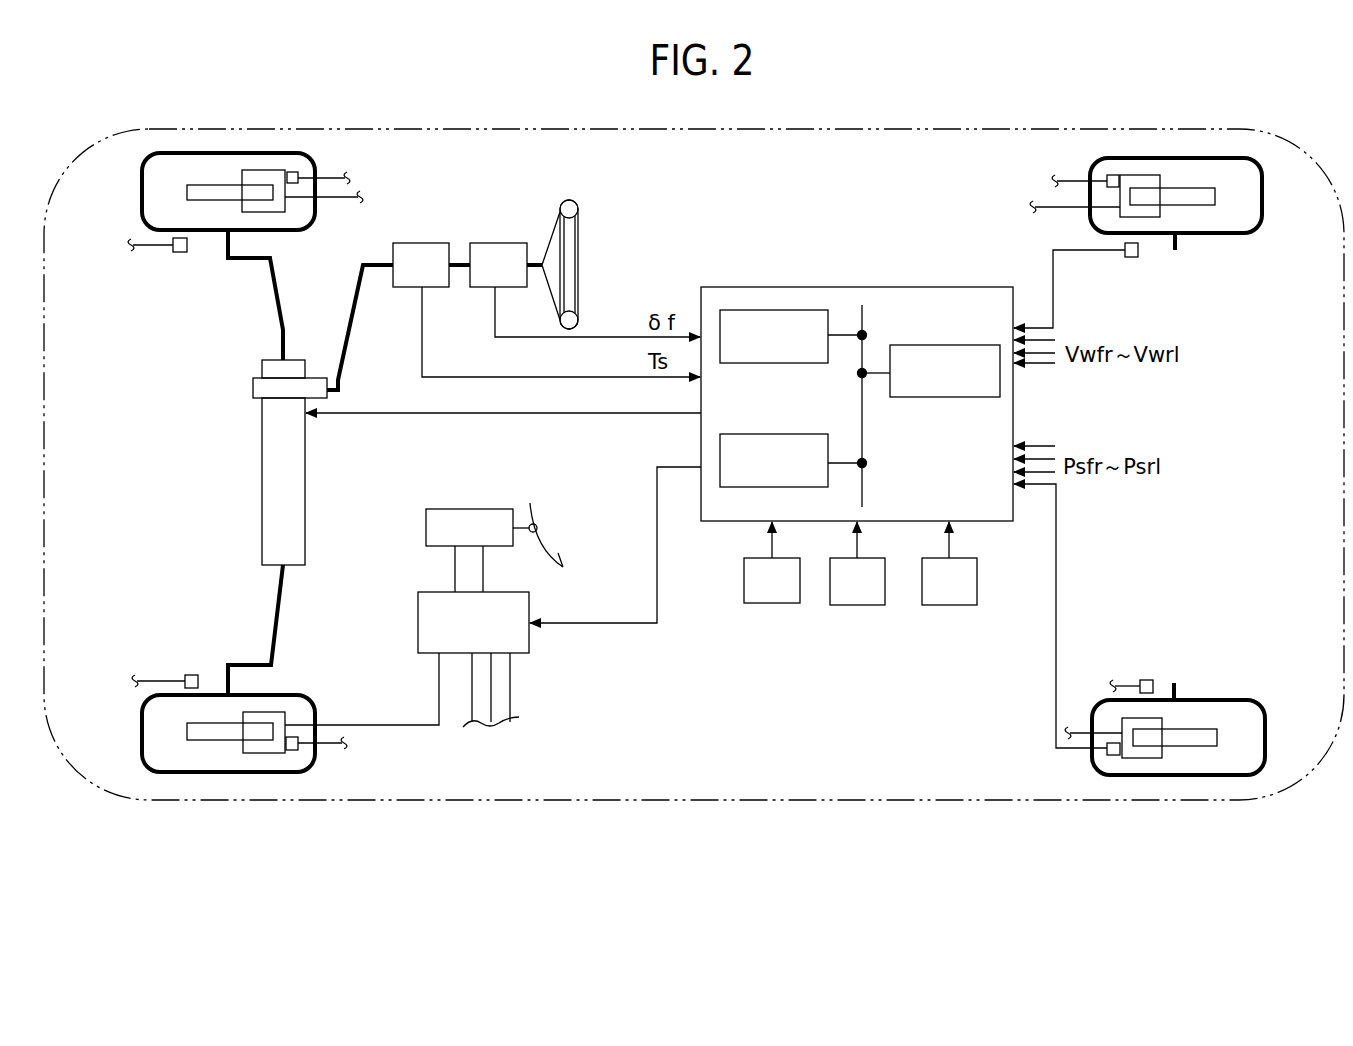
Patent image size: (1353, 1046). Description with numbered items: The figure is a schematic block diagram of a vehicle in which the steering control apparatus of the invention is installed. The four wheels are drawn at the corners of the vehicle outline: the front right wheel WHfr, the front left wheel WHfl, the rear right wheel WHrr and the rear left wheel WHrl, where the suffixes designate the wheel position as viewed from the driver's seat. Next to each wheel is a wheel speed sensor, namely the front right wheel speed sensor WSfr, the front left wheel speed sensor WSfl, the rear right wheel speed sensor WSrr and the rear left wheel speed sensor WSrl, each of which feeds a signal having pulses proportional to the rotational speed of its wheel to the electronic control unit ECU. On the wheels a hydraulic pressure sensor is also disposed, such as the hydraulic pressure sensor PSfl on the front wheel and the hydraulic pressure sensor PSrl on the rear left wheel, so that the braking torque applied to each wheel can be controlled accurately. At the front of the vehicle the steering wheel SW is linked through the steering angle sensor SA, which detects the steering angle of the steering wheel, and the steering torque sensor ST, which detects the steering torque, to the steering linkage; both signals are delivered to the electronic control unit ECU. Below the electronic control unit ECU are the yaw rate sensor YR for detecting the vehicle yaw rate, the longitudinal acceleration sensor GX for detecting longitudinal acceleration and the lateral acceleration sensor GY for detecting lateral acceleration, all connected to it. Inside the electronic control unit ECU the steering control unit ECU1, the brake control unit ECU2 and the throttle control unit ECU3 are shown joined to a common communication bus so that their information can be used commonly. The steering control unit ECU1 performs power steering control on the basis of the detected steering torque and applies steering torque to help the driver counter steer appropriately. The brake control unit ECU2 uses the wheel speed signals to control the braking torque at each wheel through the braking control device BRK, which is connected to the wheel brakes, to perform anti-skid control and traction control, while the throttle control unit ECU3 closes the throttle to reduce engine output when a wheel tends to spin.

The front right wheel WHfr is at (198, 153).
The front left hydraulic pressure sensor PSfl is at (292, 172).
The front right wheel speed sensor WSfr is at (181, 253).
The steering torque sensor ST is at (421, 265).
The steering angle sensor SA is at (498, 265).
The steering wheel SW is at (575, 200).
The electronic control unit ECU is at (857, 404).
The steering control unit ECU1 is at (793, 336).
The brake control unit ECU2 is at (929, 371).
The throttle control unit ECU3 is at (793, 460).
The yaw rate sensor YR is at (772, 562).
The longitudinal acceleration sensor GX is at (857, 563).
The lateral acceleration sensor GY is at (949, 563).
The braking control device BRK is at (493, 597).
The front left wheel WHfl is at (198, 772).
The front left wheel speed sensor WSfl is at (192, 675).
The rear right wheel WHrr is at (1205, 158).
The rear right wheel speed sensor WSrr is at (1107, 176).
The rear left wheel WHrl is at (1210, 775).
The rear left hydraulic pressure sensor PSrl is at (1113, 755).
The rear left wheel speed sensor WSrl is at (1143, 680).